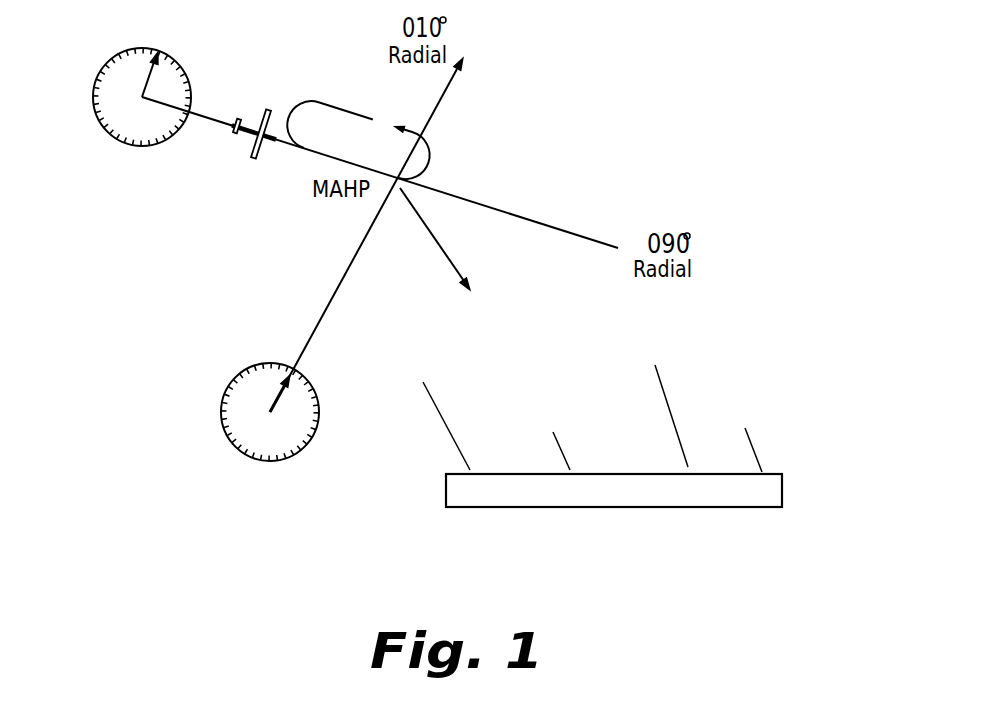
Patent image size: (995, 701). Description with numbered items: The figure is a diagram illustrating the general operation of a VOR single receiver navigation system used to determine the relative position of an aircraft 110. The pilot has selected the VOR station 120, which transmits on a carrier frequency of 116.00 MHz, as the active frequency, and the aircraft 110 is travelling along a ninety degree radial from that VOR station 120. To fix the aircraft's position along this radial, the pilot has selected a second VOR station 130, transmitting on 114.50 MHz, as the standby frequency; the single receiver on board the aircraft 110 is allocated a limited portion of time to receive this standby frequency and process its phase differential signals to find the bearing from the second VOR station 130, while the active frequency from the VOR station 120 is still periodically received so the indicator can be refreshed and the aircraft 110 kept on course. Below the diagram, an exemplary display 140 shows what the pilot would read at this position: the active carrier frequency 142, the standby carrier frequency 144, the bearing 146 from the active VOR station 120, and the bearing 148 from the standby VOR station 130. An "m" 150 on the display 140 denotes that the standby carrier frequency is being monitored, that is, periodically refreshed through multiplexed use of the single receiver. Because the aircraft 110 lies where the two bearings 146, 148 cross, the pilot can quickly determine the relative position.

The aircraft 110 is at (252, 171).
The VOR station 120 is at (127, 84).
The second VOR station 130 is at (258, 392).
The display 140 is at (783, 485).
The active carrier frequency 142 is at (450, 485).
The standby carrier frequency 144 is at (602, 497).
The bearing 146 is at (780, 498).
The bearing 148 is at (640, 477).
The m 150 is at (528, 480).